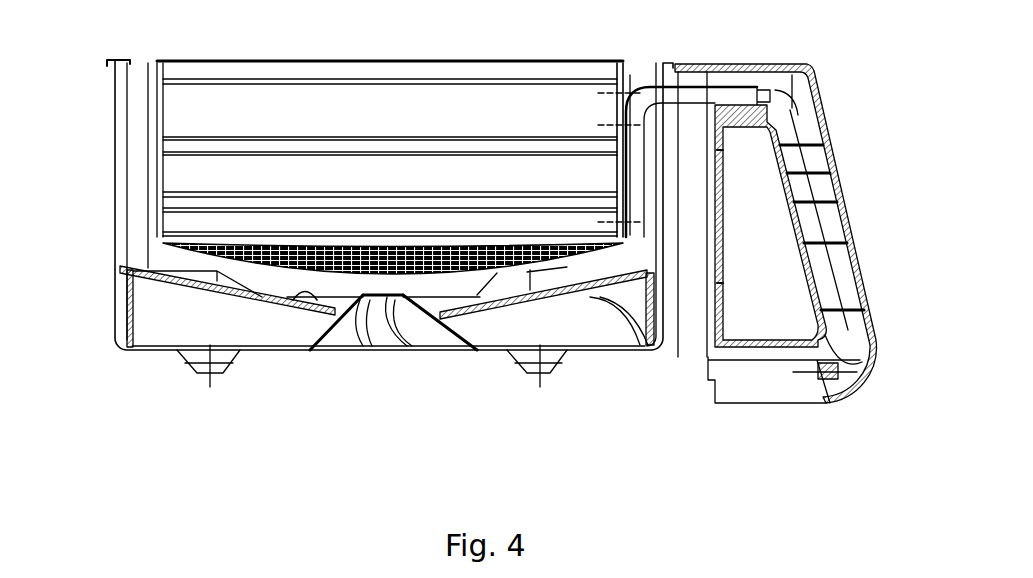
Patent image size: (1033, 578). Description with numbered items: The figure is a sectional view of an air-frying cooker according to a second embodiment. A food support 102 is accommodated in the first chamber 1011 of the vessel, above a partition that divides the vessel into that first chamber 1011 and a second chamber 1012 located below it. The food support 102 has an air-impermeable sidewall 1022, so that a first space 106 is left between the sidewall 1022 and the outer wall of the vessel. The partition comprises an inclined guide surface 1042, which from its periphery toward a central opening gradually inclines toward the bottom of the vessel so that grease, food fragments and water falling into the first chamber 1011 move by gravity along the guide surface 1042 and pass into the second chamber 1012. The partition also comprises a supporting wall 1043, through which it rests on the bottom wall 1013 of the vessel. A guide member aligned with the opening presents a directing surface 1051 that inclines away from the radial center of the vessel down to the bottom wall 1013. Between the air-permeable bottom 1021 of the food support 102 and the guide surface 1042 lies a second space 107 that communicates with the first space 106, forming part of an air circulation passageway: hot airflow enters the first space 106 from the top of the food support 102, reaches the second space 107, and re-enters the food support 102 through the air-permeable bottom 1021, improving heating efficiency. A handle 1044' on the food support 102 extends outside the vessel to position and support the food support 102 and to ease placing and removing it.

The food support 102 is at (160, 108).
The first space 106 is at (640, 180).
The second space 107 is at (637, 340).
The first chamber 1011 is at (135, 237).
The second chamber 1012 is at (257, 333).
The bottom wall 1013 is at (328, 337).
The air-permeable bottom 1021 is at (263, 267).
The air-impermeable sidewall 1022 is at (617, 157).
The guide surface 1042 is at (573, 293).
The supporting wall 1043 is at (125, 310).
The handle 1044' is at (808, 233).
The directing surface 1051 is at (428, 327).